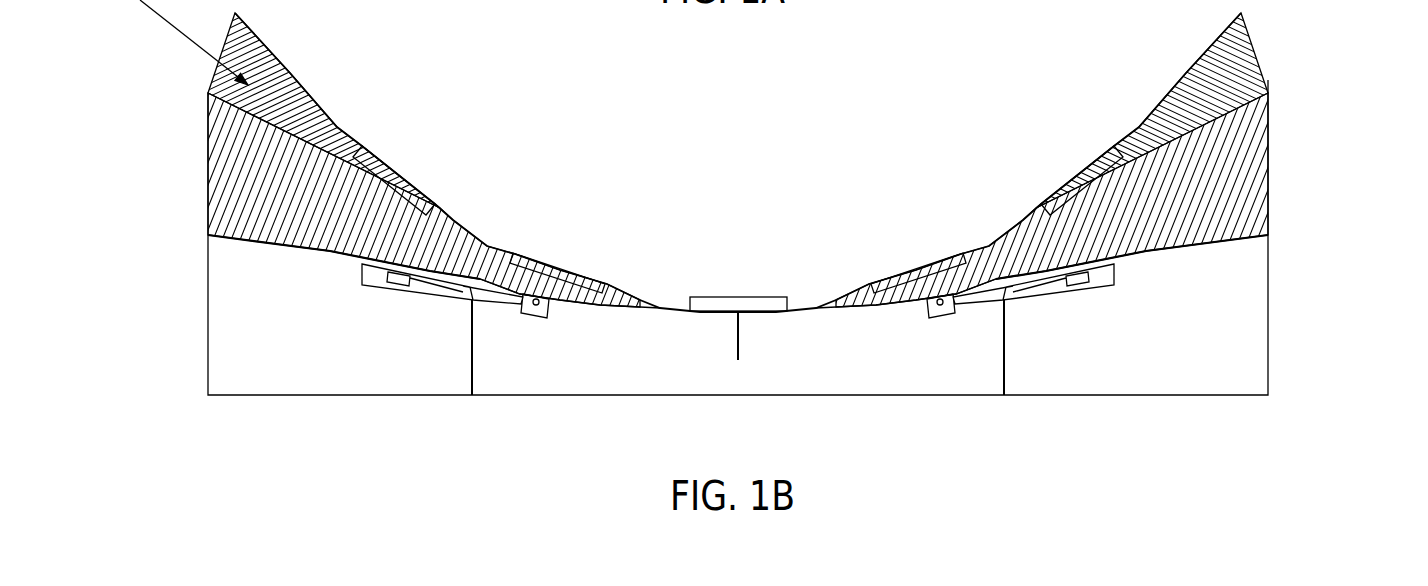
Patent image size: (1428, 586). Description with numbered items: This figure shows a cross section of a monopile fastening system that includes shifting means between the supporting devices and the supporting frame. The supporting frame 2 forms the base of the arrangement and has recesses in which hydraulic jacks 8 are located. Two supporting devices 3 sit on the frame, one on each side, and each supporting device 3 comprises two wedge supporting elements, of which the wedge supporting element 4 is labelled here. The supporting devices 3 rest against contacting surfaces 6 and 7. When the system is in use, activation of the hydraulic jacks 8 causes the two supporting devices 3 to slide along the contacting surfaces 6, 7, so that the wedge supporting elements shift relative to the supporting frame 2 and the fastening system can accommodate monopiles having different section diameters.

The supporting frame 2 is at (398, 338).
The supporting device 3 is at (210, 12).
The wedge supporting element 4 is at (245, 193).
The contacting surface 6 is at (300, 237).
The contacting surface 7 is at (282, 252).
The hydraulic jack 8 is at (478, 290).